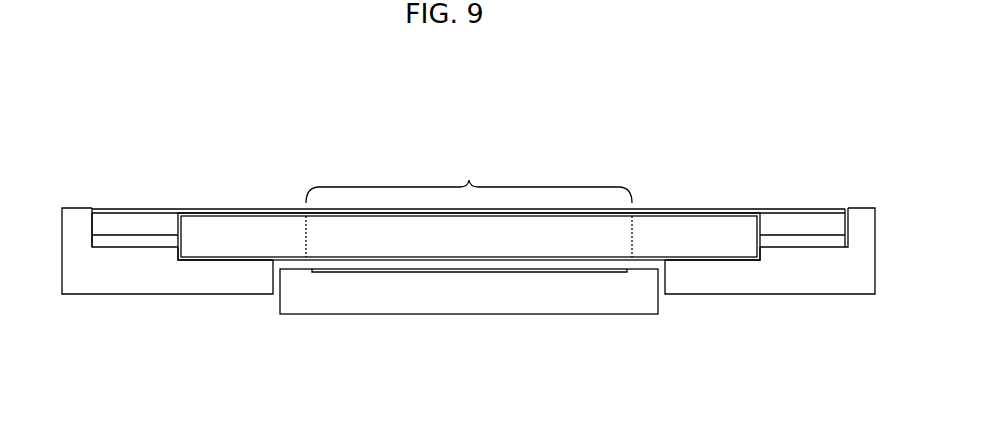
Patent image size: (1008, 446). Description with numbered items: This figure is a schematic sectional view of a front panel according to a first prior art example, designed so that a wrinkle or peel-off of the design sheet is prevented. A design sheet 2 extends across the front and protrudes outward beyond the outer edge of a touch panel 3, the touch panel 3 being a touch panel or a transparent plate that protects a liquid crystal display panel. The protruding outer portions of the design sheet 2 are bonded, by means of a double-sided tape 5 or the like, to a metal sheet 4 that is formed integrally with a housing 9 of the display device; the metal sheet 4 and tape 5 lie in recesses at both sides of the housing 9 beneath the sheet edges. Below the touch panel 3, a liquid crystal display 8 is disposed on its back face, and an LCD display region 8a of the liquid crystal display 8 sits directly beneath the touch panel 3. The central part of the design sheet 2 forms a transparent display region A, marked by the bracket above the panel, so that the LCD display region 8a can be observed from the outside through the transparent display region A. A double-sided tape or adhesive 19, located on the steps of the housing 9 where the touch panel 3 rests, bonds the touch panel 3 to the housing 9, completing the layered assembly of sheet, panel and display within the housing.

The design sheet 2 is at (163, 209).
The touch panel 3 is at (437, 241).
The metal sheet 4 is at (113, 242).
The double-sided tape 5 is at (110, 222).
The liquid crystal display 8 is at (345, 308).
The LCD display region 8a is at (610, 275).
The housing 9 is at (770, 280).
The double-sided tape or adhesive 19 is at (220, 260).
The transparent display region A is at (469, 178).